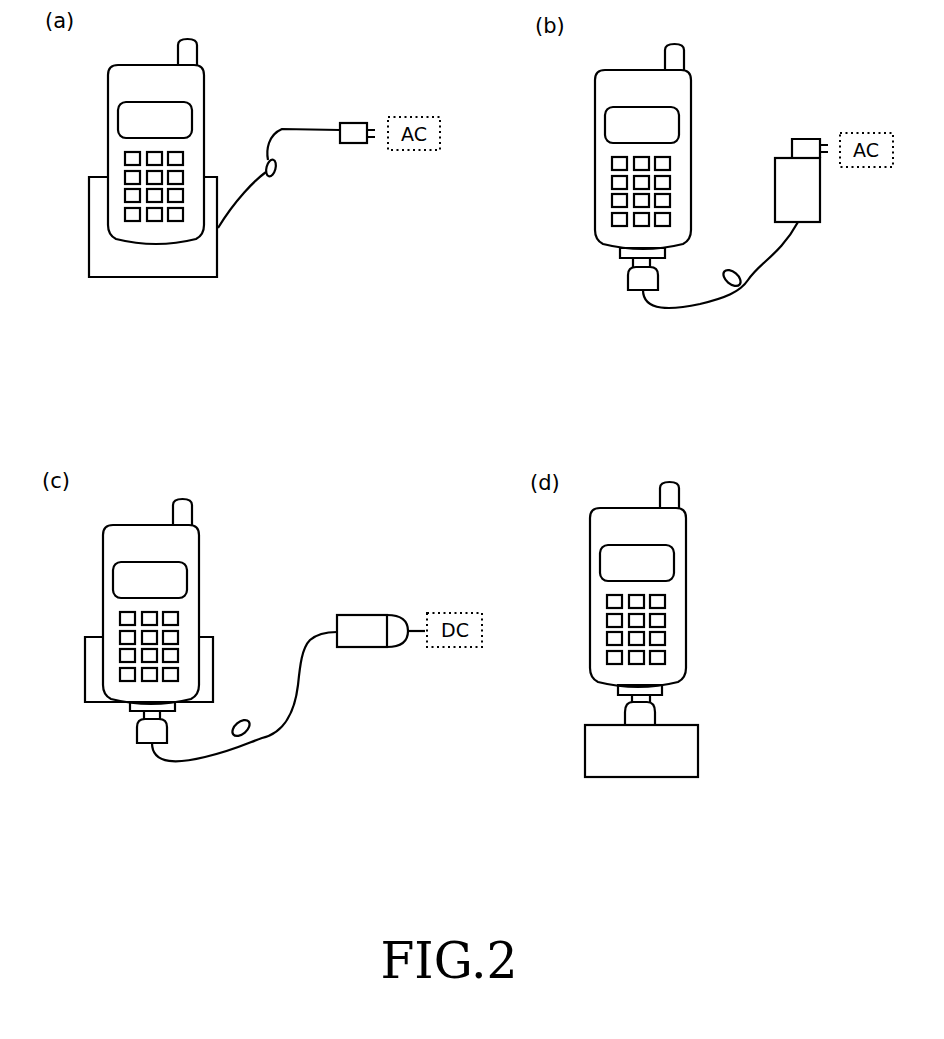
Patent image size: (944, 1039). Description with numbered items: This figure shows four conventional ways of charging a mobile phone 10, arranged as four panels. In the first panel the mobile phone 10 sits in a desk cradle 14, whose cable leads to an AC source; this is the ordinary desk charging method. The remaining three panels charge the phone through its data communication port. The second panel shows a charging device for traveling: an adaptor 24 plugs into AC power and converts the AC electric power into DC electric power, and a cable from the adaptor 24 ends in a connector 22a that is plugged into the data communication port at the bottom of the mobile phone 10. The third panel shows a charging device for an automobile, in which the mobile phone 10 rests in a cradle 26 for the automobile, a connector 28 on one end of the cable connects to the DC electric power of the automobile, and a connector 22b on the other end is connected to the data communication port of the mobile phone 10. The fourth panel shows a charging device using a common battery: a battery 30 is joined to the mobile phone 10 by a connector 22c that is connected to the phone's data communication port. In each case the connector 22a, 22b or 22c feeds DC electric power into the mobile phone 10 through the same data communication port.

The mobile phone 10 is at (192, 80).
The desk cradle 14 is at (212, 262).
The connector 22a is at (620, 265).
The adaptor 24 is at (808, 203).
The cradle for the automobile 26 is at (95, 653).
The connector 22b is at (130, 718).
The connector 28 is at (357, 640).
The connector 22c is at (660, 688).
The battery 30 is at (665, 768).